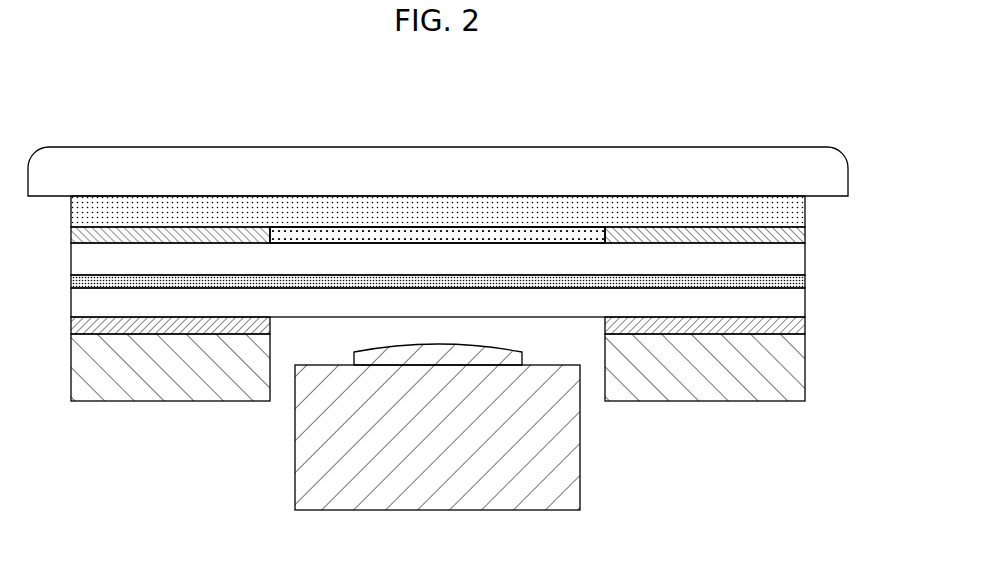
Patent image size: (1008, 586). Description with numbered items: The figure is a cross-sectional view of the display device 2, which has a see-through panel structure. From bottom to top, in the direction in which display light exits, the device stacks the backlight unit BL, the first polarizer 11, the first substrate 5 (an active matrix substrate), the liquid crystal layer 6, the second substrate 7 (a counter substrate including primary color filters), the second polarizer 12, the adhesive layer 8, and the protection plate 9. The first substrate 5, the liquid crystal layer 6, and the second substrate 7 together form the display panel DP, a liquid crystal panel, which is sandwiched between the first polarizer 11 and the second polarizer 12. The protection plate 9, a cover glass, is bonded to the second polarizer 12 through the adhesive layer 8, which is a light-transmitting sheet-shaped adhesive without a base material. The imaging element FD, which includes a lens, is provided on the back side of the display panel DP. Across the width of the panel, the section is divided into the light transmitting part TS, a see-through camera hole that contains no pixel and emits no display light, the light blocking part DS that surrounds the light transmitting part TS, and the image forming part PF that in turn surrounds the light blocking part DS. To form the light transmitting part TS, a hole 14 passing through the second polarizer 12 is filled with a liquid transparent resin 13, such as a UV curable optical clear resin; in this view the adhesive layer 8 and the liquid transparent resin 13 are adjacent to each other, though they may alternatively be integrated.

The display device 2 is at (802, 133).
The protection plate 9 is at (835, 176).
The adhesive layer 8 is at (795, 214).
The second polarizer 12 is at (173, 238).
The liquid transparent resin 13 is at (516, 238).
The hole 14 is at (363, 226).
The second substrate 7 is at (808, 256).
The liquid crystal layer 6 is at (808, 280).
The first substrate 5 is at (455, 302).
The first polarizer 11 is at (78, 327).
The backlight unit BL is at (86, 364).
The imaging element FD is at (441, 490).
The display panel DP is at (479, 280).
The image forming part PF is at (229, 79).
The light blocking part DS is at (289, 335).
The light transmitting part TS is at (438, 328).